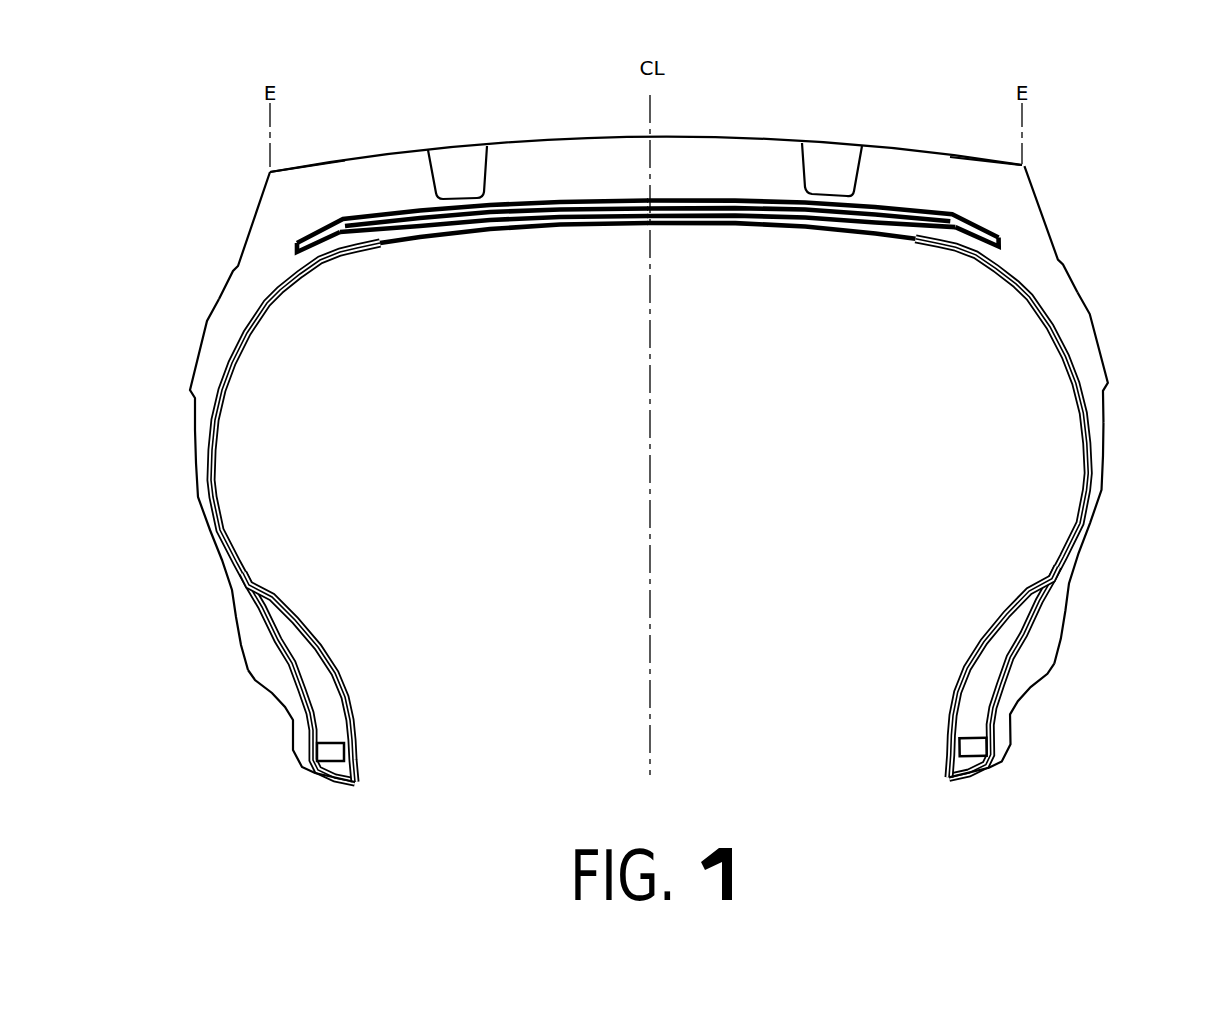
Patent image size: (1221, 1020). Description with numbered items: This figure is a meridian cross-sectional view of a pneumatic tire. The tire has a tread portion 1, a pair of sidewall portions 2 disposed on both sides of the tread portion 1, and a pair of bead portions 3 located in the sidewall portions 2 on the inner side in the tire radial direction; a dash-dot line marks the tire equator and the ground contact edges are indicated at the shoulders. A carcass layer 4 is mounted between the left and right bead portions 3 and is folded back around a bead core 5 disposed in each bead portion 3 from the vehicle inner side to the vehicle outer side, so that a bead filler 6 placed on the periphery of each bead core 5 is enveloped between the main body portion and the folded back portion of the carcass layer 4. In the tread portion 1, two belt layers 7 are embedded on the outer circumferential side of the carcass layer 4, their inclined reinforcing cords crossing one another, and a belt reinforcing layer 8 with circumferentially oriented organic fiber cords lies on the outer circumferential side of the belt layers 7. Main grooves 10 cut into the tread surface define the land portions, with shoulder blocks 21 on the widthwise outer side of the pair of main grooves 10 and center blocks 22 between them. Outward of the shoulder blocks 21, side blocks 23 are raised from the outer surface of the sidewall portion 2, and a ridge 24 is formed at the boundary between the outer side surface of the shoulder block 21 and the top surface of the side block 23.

The tread portion 1 is at (680, 124).
The sidewall portion 2 is at (188, 510).
The bead portion 3 is at (279, 752).
The carcass layer 4 is at (1007, 274).
The bead core 5 is at (332, 752).
The bead filler 6 is at (320, 693).
The belt layer 7 is at (729, 214).
The belt reinforcing layer 8 is at (822, 216).
The main groove 10 is at (460, 163).
The shoulder block 21 is at (343, 160).
The center block 22 is at (575, 139).
The side block 23 is at (206, 324).
The ridge 24 is at (232, 278).